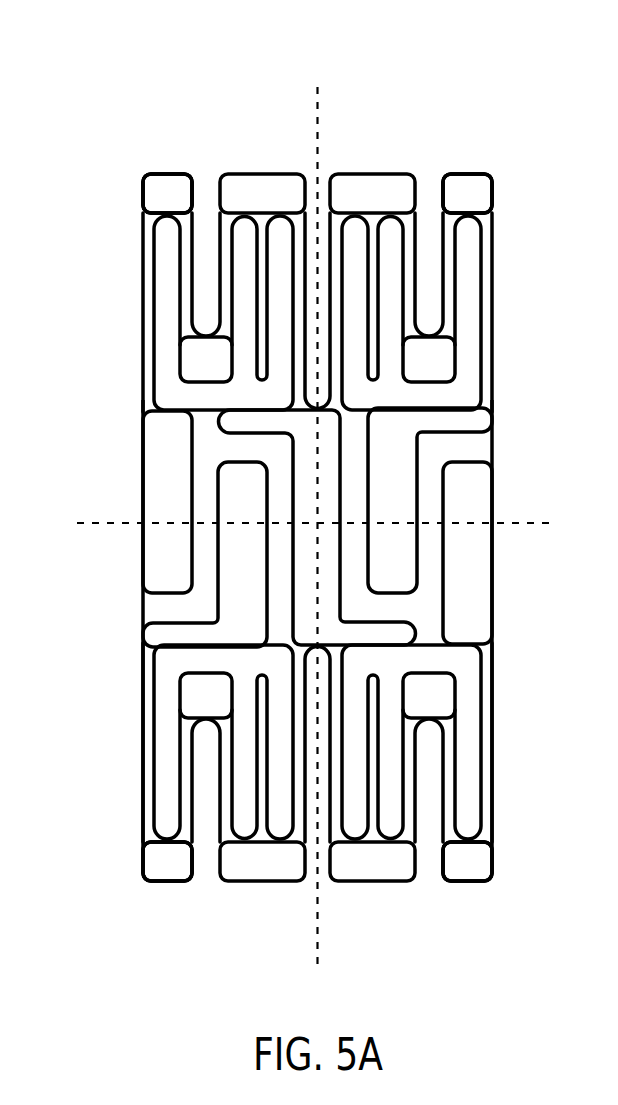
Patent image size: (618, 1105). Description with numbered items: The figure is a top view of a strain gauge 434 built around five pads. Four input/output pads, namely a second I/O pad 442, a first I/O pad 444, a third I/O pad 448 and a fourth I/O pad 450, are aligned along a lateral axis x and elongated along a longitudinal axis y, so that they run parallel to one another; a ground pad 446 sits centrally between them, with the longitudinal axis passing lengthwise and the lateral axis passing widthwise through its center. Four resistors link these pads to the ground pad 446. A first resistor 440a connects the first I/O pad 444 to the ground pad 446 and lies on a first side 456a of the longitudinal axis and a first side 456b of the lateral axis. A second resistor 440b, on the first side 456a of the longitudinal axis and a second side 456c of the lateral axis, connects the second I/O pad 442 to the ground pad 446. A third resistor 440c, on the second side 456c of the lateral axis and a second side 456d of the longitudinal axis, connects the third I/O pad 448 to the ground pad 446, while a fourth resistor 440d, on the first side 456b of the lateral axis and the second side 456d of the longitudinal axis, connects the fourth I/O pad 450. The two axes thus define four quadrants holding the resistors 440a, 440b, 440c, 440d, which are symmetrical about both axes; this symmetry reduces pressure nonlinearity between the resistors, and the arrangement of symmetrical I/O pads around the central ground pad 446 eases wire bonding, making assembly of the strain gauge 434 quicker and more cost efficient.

The strain gauge 434 is at (326, 486).
The first resistor 440a is at (168, 768).
The second resistor 440b is at (136, 290).
The third resistor 440c is at (458, 293).
The fourth resistor 440d is at (442, 770).
The second I/O pad 442 is at (158, 540).
The first I/O pad 444 is at (238, 472).
The ground pad 446 is at (328, 453).
The third I/O pad 448 is at (397, 582).
The fourth I/O pad 450 is at (480, 540).
The first side of the longitudinal axis 456a is at (128, 158).
The first side of the lateral axis 456b is at (317, 861).
The second side of the lateral axis 456c is at (317, 193).
The second side of the longitudinal axis 456d is at (525, 183).